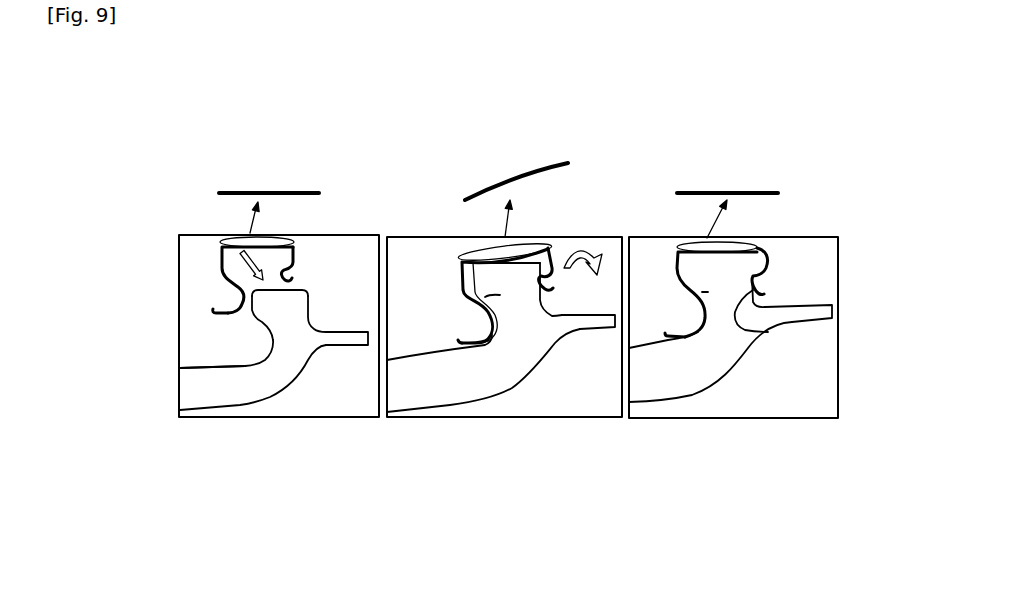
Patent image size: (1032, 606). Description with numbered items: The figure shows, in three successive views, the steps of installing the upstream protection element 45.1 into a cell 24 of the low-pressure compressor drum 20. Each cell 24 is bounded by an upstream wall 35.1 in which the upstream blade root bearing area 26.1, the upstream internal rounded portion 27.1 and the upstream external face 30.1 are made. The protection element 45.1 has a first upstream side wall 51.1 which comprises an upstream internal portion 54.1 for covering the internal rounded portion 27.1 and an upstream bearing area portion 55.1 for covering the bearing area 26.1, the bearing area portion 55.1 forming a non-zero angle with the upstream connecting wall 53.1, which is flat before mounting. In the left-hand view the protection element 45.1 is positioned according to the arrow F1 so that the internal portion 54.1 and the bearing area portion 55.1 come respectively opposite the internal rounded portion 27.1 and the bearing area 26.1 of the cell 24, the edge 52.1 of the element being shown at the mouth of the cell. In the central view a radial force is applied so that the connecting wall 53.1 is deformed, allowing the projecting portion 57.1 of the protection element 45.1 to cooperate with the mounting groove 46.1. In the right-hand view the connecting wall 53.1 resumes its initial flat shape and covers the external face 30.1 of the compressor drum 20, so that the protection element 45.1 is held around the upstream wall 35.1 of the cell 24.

The compressor drum 20 is at (197, 388).
The cell 24 is at (193, 330).
The upstream blade root bearing area 26.1 is at (257, 318).
The upstream internal rounded portion 27.1 is at (288, 312).
The upstream external face 30.1 is at (690, 243).
The upstream wall 35.1 is at (310, 330).
The upstream protection element 45.1 is at (220, 243).
The mounting groove 46.1 is at (303, 344).
The first upstream side wall 51.1 is at (213, 280).
The membrane rim 52.1 is at (298, 250).
The upstream connecting wall 53.1 is at (267, 193).
The upstream internal portion 54.1 is at (230, 313).
The upstream bearing area portion 55.1 is at (500, 295).
The projecting portion 57.1 is at (292, 276).
The positioning arrow F1 is at (218, 223).